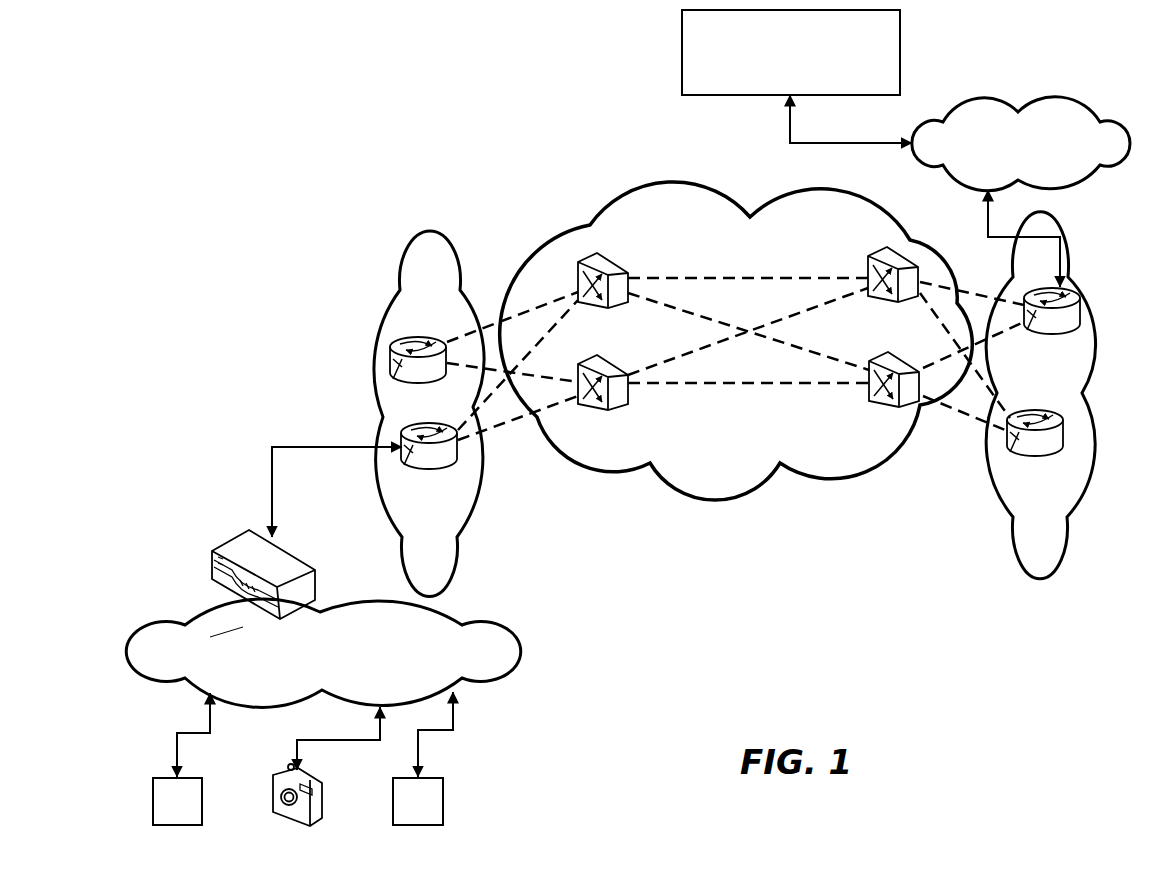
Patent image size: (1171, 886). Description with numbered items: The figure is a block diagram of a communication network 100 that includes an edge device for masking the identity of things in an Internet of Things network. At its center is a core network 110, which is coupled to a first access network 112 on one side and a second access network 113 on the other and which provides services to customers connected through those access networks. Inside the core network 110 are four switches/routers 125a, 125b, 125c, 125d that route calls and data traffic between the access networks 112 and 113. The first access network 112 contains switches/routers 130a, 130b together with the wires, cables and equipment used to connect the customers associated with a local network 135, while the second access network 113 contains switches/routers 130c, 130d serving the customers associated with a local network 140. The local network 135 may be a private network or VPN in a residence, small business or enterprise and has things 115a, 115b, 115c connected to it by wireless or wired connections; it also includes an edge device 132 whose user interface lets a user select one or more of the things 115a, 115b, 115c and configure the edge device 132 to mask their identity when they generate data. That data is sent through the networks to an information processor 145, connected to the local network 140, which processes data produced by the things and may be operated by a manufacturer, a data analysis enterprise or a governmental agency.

The communication network 100 is at (343, 130).
The core network 110 is at (656, 183).
The first access network 112 is at (430, 242).
The second access network 113 is at (1038, 222).
The switch/router 125a is at (623, 261).
The switch/router 125b is at (596, 362).
The switch/router 125c is at (868, 268).
The switch/router 125d is at (907, 357).
The switch/router 130a is at (393, 337).
The switch/router 130b is at (403, 460).
The switch/router 130c is at (1070, 337).
The switch/router 130d is at (1010, 453).
The edge device 132 is at (225, 538).
The local network 135 is at (323, 653).
The local network 140 is at (1021, 144).
The information processor 145 is at (791, 52).
The thing 115a is at (152, 800).
The thing 115b is at (273, 785).
The thing 115c is at (392, 787).